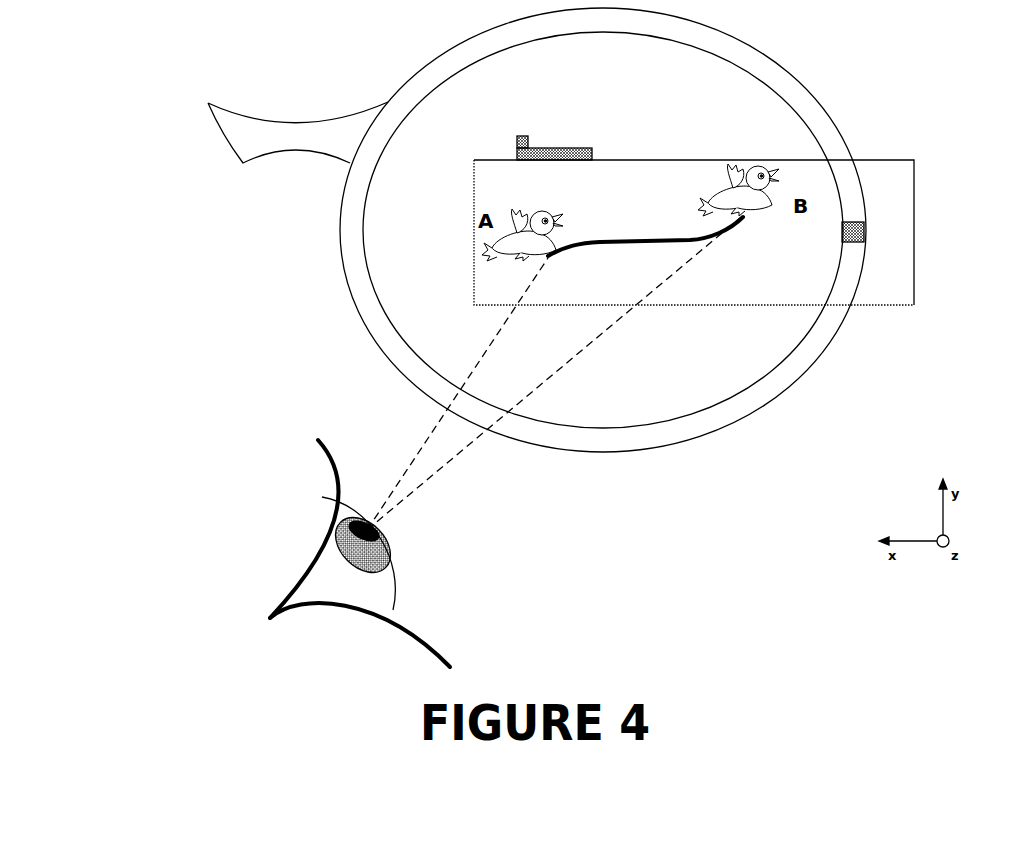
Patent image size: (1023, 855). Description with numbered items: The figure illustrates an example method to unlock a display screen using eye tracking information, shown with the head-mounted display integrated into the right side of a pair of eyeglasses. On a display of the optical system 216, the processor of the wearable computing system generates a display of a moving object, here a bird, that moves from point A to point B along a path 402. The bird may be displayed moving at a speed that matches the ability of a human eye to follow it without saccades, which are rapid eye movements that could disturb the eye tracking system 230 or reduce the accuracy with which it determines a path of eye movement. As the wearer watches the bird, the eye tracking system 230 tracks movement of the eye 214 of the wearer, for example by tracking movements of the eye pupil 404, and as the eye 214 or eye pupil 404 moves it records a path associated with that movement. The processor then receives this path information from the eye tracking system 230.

The optical system 216 is at (862, 158).
The eye tracking system 230 is at (555, 148).
The path 402 is at (595, 245).
The eye 214 is at (246, 553).
The eye pupil 404 is at (427, 560).